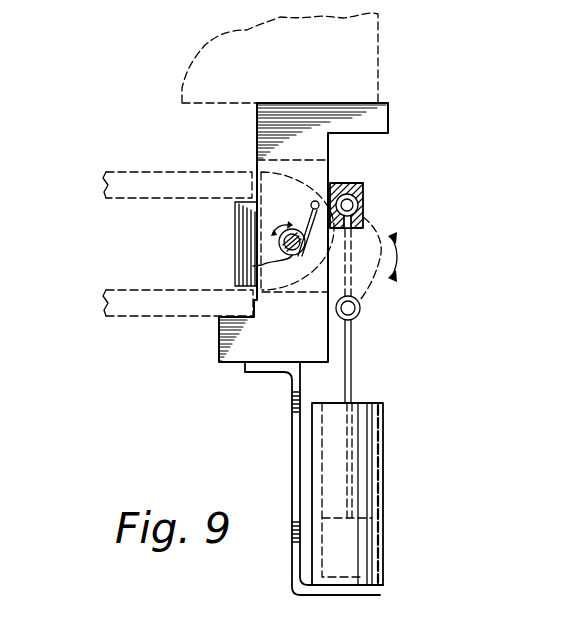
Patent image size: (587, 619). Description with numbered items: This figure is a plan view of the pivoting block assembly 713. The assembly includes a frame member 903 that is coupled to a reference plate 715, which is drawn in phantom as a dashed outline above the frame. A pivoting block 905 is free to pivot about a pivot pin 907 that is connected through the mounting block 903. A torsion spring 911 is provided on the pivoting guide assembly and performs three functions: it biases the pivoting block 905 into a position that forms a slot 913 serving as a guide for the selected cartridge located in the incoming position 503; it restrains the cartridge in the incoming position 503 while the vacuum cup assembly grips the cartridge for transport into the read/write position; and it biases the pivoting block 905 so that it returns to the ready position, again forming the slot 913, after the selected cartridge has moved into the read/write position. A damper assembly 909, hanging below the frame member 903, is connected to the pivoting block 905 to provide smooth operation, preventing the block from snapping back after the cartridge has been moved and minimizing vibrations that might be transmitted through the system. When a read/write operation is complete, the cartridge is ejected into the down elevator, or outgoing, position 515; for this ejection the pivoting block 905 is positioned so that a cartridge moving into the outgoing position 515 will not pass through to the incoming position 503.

The reference plate 715 is at (374, 58).
The frame member 903 is at (386, 118).
The outgoing position 515 is at (106, 175).
The incoming position 503 is at (150, 316).
The pivoting block 905 is at (235, 239).
The pivot pin 907 is at (253, 266).
The torsion spring 911 is at (307, 228).
The slot 913 is at (259, 299).
The pivoting block assembly 713 is at (492, 247).
The damper assembly 909 is at (362, 442).